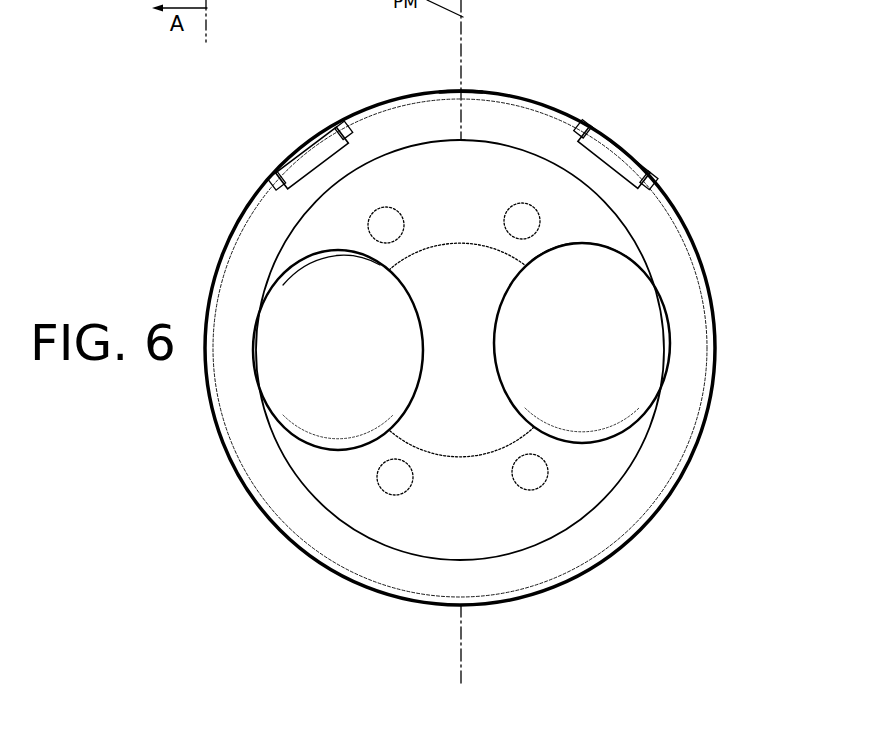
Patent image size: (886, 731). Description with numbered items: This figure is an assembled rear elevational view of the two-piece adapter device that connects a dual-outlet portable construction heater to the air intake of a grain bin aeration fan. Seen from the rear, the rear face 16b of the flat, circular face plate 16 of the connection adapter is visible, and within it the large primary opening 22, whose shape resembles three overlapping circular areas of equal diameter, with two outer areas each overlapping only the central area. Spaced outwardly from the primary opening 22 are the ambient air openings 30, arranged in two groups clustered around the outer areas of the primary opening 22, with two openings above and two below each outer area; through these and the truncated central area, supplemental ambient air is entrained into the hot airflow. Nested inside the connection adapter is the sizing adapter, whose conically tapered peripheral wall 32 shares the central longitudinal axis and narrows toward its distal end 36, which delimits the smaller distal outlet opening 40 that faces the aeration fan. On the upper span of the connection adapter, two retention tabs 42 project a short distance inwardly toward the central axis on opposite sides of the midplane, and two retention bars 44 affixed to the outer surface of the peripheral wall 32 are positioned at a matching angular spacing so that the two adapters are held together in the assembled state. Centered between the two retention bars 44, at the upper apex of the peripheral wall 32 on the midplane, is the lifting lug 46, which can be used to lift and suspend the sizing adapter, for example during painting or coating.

The face plate 16 is at (488, 232).
The rear face 16b is at (435, 220).
The primary opening 22 is at (461, 436).
The ambient air openings 30 is at (385, 218).
The tapered peripheral wall 32 is at (677, 256).
The distal end 36 is at (345, 522).
The distal outlet opening 40 is at (385, 529).
The retention tabs 42 is at (312, 153).
The retention bars 44 is at (340, 123).
The lifting lug 46 is at (465, 78).